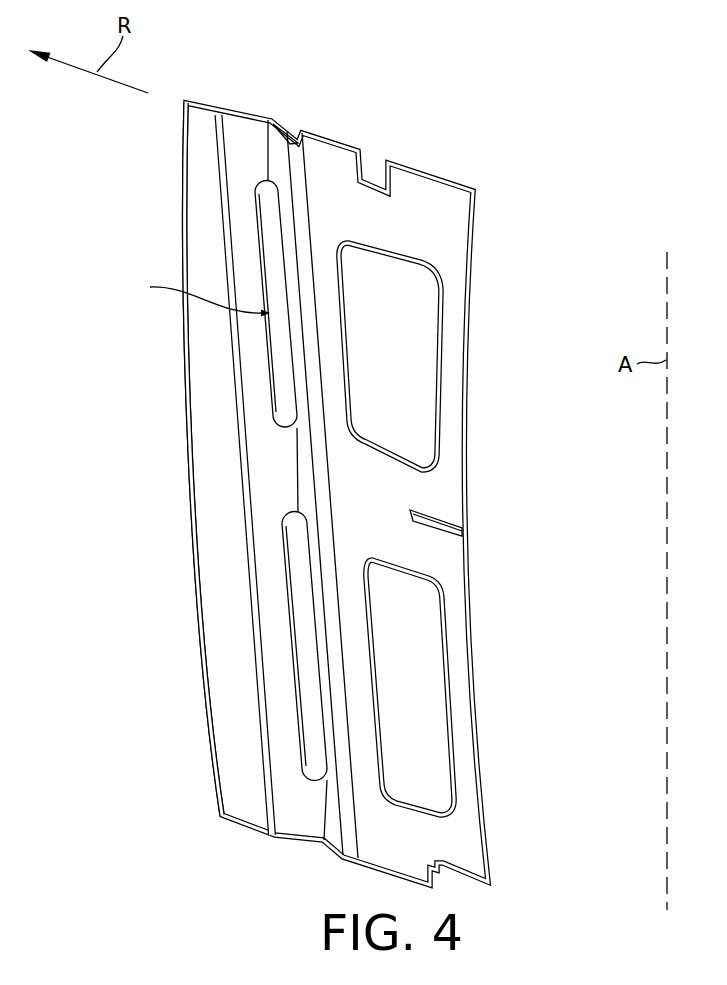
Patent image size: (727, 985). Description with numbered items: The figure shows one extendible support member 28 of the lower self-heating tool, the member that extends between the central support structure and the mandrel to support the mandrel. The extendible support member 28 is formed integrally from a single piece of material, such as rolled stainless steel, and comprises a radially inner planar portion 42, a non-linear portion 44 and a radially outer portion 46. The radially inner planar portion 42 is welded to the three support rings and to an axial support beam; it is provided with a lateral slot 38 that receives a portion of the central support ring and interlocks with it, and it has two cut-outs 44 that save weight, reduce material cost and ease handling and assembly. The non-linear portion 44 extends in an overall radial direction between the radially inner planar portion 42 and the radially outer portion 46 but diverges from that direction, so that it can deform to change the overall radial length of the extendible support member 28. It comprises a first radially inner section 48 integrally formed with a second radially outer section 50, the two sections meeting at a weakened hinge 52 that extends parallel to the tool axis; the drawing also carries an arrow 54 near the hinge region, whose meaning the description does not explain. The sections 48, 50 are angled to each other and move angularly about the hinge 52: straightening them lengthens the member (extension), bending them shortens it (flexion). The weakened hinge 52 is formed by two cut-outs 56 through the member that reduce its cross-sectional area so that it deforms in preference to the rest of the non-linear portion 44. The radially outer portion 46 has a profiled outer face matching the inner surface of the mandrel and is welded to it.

The extendible support member 28 is at (362, 473).
The lateral slot 38 is at (455, 533).
The radially inner planar portion 42 is at (458, 225).
The non-linear portion 44 is at (242, 132).
The radially outer portion 46 is at (186, 178).
The first radially inner section 48 is at (283, 137).
The second radially outer section 50 is at (242, 216).
The weakened hinge 52 is at (290, 460).
The direction arrow 54 is at (195, 297).
The cut-outs 56 is at (285, 382).